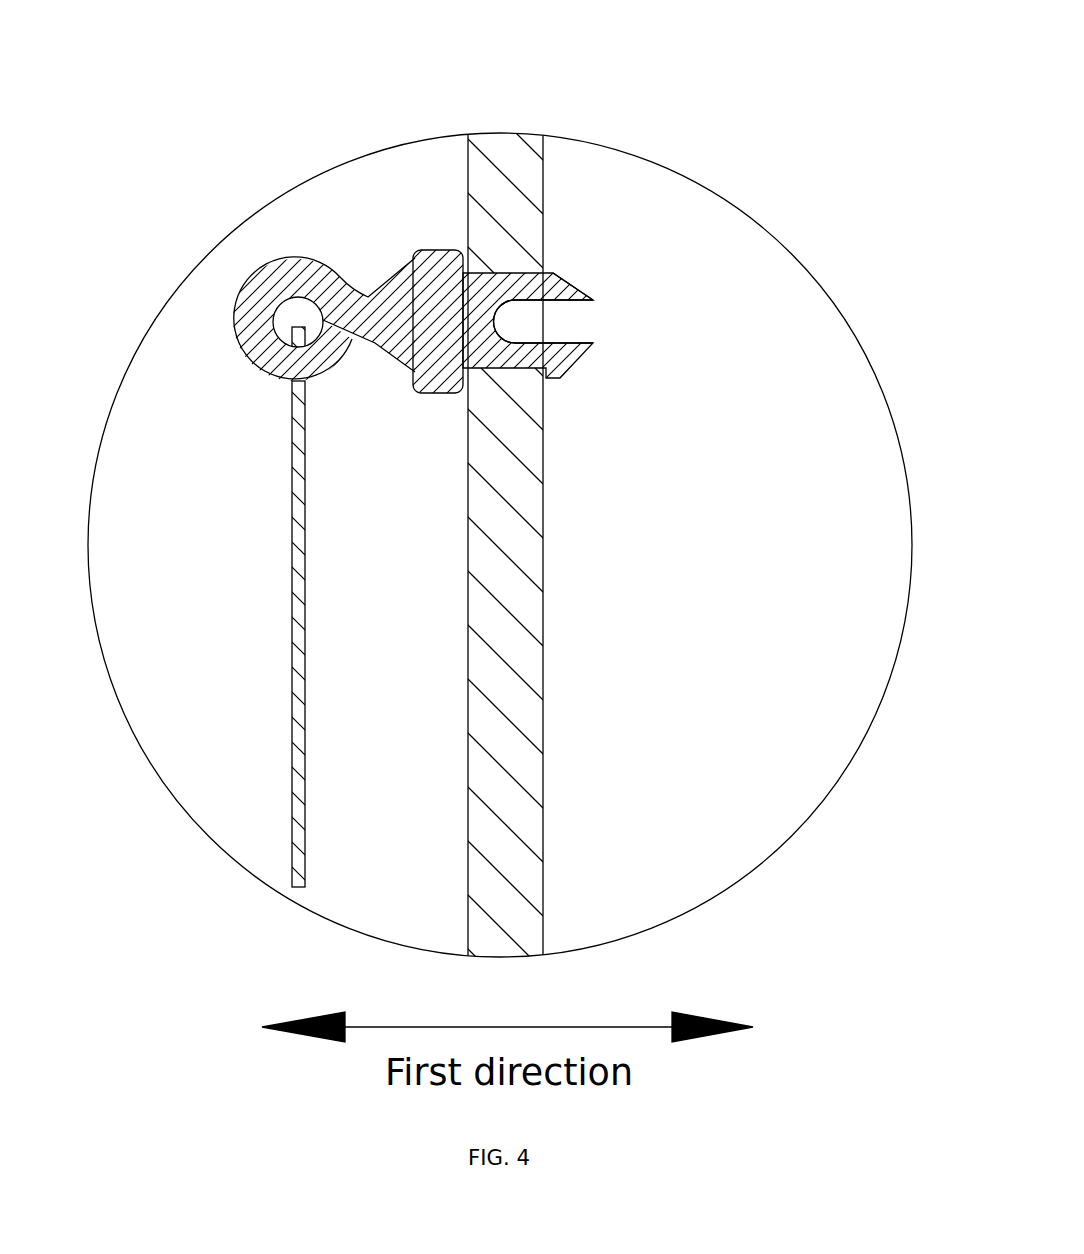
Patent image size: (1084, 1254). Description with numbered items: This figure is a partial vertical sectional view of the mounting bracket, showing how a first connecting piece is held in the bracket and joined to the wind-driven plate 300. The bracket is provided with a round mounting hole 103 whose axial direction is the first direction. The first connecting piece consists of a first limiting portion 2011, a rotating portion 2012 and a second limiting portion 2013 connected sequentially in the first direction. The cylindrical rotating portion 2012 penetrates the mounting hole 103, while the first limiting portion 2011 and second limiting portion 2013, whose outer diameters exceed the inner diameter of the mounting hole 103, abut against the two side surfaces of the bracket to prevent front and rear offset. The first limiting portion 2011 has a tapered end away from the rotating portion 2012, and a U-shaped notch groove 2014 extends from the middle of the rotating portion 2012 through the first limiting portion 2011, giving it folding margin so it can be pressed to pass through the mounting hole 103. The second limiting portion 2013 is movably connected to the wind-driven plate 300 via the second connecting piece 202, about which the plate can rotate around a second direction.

The mounting hole 103 is at (520, 267).
The second connecting piece 202 is at (250, 333).
The wind-driven plate 300 is at (293, 695).
The first limiting portion 2011 is at (553, 265).
The rotating portion 2012 is at (608, 191).
The second limiting portion 2013 is at (430, 263).
The notch groove 2014 is at (570, 318).